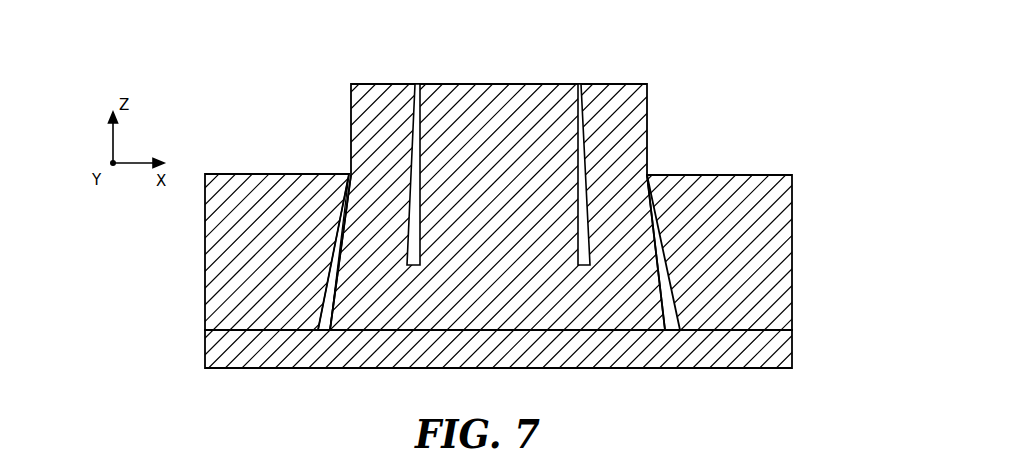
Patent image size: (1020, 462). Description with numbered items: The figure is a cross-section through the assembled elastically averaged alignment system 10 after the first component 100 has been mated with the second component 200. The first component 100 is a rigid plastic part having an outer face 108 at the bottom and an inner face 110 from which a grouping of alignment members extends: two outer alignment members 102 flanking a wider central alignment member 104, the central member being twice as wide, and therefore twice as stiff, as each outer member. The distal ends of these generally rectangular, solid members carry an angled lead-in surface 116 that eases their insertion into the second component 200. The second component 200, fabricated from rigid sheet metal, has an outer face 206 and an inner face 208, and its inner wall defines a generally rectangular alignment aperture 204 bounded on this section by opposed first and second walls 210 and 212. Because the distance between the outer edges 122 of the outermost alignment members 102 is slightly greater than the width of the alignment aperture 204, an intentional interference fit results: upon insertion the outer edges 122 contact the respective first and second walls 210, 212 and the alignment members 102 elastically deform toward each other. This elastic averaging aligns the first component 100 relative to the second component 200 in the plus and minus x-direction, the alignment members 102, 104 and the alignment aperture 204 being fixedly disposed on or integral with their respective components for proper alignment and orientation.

The system 10 is at (749, 76).
The first component 100 is at (198, 352).
The alignment member 102 is at (382, 75).
The alignment member 104 is at (503, 75).
The outer face 108 is at (747, 369).
The inner face 110 is at (763, 330).
The angled lead-in surface 116 is at (350, 128).
The outer edge 122 is at (340, 204).
The second component 200 is at (198, 262).
The alignment aperture 204 is at (317, 336).
The outer face 206 is at (760, 174).
The inner face 208 is at (770, 333).
The first wall 210 is at (338, 198).
The second wall 212 is at (660, 198).